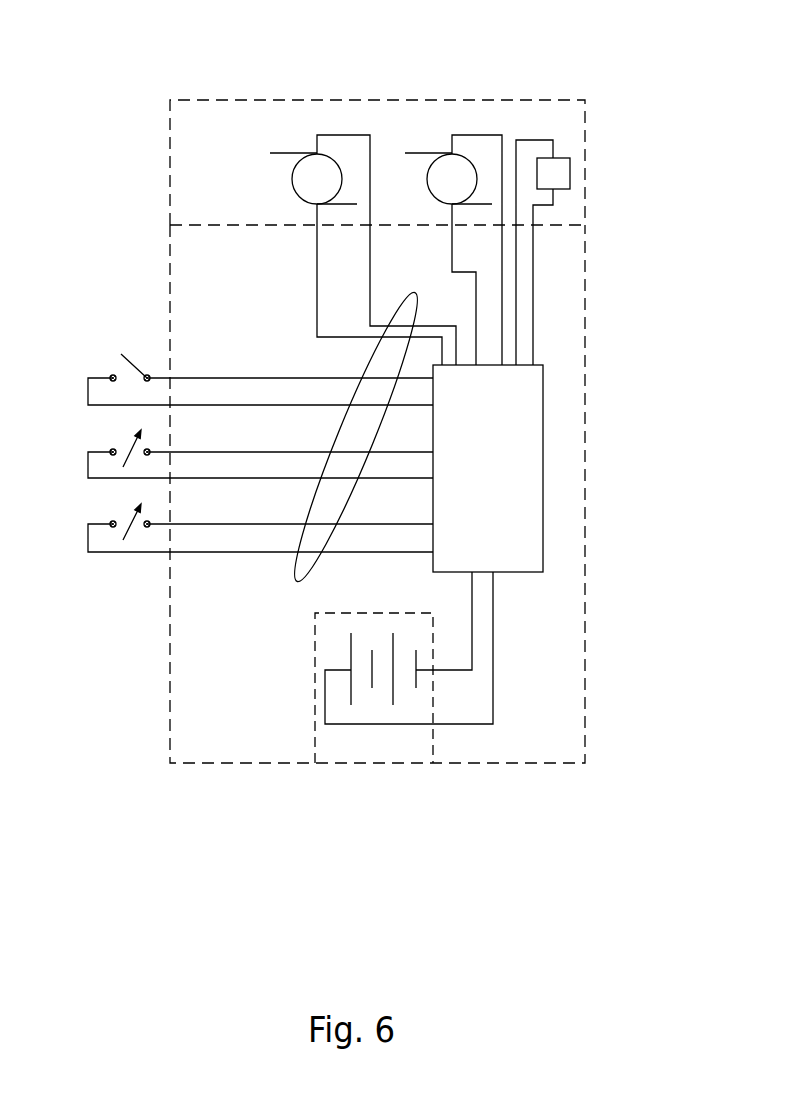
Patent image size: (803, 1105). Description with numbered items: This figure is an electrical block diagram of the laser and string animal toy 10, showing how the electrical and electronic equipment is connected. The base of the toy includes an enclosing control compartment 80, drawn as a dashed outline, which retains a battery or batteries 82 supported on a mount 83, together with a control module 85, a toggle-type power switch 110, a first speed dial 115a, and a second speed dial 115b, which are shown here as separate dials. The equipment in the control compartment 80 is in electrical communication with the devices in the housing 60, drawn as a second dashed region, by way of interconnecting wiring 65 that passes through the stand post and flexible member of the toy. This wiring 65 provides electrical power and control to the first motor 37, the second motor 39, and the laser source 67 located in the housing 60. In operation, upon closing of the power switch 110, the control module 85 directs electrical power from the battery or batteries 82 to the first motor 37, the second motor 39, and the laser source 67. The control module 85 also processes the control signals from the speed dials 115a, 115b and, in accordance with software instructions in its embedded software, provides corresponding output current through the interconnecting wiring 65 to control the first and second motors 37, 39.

The laser and string animal toy 10 is at (617, 600).
The first motor 37 is at (315, 153).
The second motor 39 is at (449, 153).
The housing 60 is at (587, 162).
The interconnecting wiring 65 is at (370, 367).
The laser source 67 is at (563, 175).
The control compartment 80 is at (586, 483).
The battery or batteries 82 is at (340, 660).
The mount 83 is at (435, 750).
The control module 85 is at (545, 397).
The power switch 110 is at (122, 362).
The first speed dial 115a is at (127, 443).
The second speed dial 115b is at (127, 519).